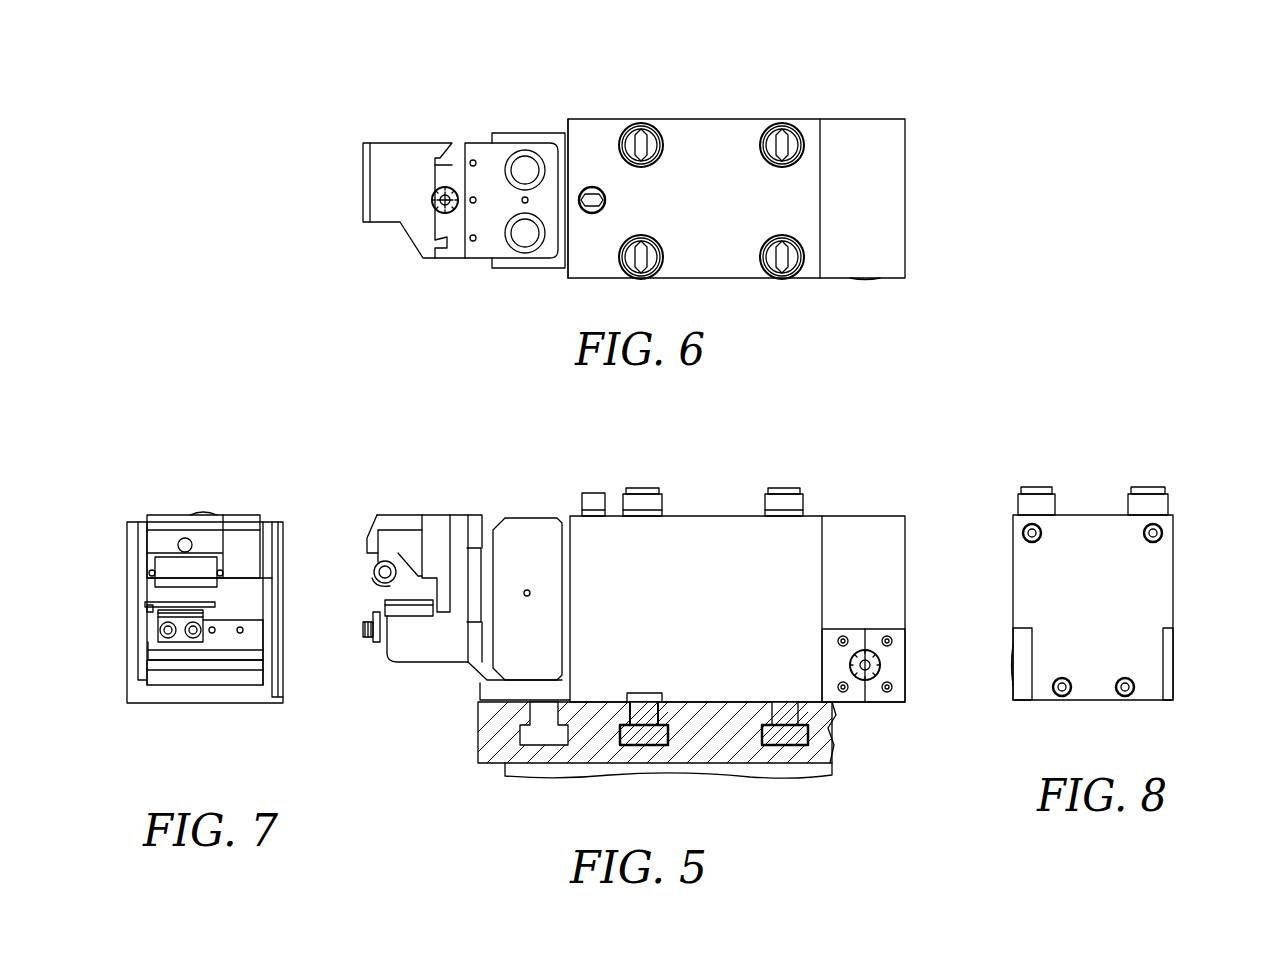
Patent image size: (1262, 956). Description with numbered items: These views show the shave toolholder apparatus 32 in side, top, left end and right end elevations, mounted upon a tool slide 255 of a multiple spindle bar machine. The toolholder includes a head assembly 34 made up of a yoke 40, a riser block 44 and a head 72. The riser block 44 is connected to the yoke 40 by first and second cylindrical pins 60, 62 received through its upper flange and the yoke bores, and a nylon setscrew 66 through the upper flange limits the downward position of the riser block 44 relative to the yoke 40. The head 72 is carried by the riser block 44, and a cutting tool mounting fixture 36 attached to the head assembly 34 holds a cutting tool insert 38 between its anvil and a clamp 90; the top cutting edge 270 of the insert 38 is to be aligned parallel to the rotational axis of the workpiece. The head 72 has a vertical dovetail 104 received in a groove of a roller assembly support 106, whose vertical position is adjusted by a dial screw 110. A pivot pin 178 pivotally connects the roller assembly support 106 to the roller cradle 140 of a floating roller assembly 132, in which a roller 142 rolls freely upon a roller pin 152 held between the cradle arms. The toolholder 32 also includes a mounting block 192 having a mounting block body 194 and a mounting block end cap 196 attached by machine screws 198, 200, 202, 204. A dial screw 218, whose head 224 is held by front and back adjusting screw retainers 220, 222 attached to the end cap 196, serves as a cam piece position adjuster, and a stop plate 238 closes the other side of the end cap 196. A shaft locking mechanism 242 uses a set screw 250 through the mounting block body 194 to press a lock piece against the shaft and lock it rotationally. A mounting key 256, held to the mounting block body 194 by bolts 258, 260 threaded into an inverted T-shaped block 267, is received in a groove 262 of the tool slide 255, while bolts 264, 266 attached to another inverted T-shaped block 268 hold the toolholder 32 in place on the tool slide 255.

In FIG. 6, the toolholder apparatus 32 is at (852, 92).
In FIG. 5, the toolholder apparatus 32 is at (866, 436).
In FIG. 7, the toolholder apparatus 32 is at (228, 487).
In FIG. 8, the toolholder apparatus 32 is at (1097, 450).
In FIG. 6, the head assembly 34 is at (441, 185).
In FIG. 5, the head assembly 34 is at (447, 610).
In FIG. 7, the head assembly 34 is at (156, 617).
In FIG. 5, the cutting tool mounting fixture 36 is at (398, 648).
In FIG. 7, the cutting tool mounting fixture 36 is at (120, 653).
In FIG. 7, the cutting tool insert 38 is at (147, 607).
In FIG. 6, the yoke 40 is at (520, 171).
In FIG. 5, the yoke 40 is at (533, 667).
In FIG. 7, the yoke 40 is at (277, 660).
In FIG. 6, the riser block 44 is at (482, 250).
In FIG. 5, the riser block 44 is at (487, 680).
In FIG. 7, the riser block 44 is at (215, 678).
In FIG. 6, the first cylindrical pin 60 is at (525, 167).
In FIG. 6, the second cylindrical pin 62 is at (525, 243).
In FIG. 6, the nylon setscrew 66 is at (522, 197).
In FIG. 6, the head 72 is at (390, 171).
In FIG. 5, the head 72 is at (406, 580).
In FIG. 7, the head 72 is at (220, 643).
In FIG. 5, the clamp 90 is at (375, 642).
In FIG. 7, the clamp 90 is at (180, 640).
In FIG. 6, the vertical dovetail 104 is at (437, 172).
In FIG. 6, the roller assembly support 106 is at (385, 147).
In FIG. 5, the roller assembly support 106 is at (422, 512).
In FIG. 7, the roller assembly support 106 is at (160, 525).
In FIG. 6, the dial screw 110 is at (432, 207).
In FIG. 7, the dial screw 110 is at (203, 511).
In FIG. 5, the floating roller assembly 132 is at (401, 526).
In FIG. 7, the floating roller assembly 132 is at (129, 577).
In FIG. 5, the roller cradle 140 is at (393, 552).
In FIG. 7, the roller cradle 140 is at (148, 563).
In FIG. 5, the roller 142 is at (360, 551).
In FIG. 7, the roller 142 is at (158, 583).
In FIG. 5, the roller pin 152 is at (383, 574).
In FIG. 7, the pivot pin 178 is at (177, 547).
In FIG. 6, the mounting block 192 is at (789, 153).
In FIG. 5, the mounting block 192 is at (761, 607).
In FIG. 7, the mounting block 192 is at (208, 654).
In FIG. 8, the mounting block 192 is at (1135, 607).
In FIG. 6, the mounting block body 194 is at (683, 132).
In FIG. 5, the mounting block body 194 is at (700, 525).
In FIG. 7, the mounting block body 194 is at (280, 655).
In FIG. 6, the mounting block end cap 196 is at (893, 181).
In FIG. 5, the mounting block end cap 196 is at (887, 639).
In FIG. 8, the mounting block end cap 196 is at (1152, 580).
In FIG. 8, the machine screw 198 is at (1162, 532).
In FIG. 8, the machine screw 200 is at (1023, 532).
In FIG. 8, the machine screw 202 is at (1128, 690).
In FIG. 8, the machine screw 204 is at (1065, 690).
In FIG. 5, the dial screw 218 is at (887, 714).
In FIG. 5, the front adjusting screw retainer 220 is at (830, 697).
In FIG. 5, the back adjusting screw retainer 222 is at (897, 668).
In FIG. 8, the back adjusting screw retainer 222 is at (1020, 683).
In FIG. 5, the head of dial screw 224 is at (887, 714).
In FIG. 8, the stop plate 238 is at (1168, 665).
In FIG. 6, the shaft locking mechanism 242 is at (627, 119).
In FIG. 5, the shaft locking mechanism 242 is at (651, 457).
In FIG. 6, the set screw 250 is at (592, 187).
In FIG. 5, the set screw 250 is at (593, 492).
In FIG. 5, the tool slide 255 is at (740, 753).
In FIG. 5, the mounting key 256 is at (662, 712).
In FIG. 6, the bolt 258 is at (641, 124).
In FIG. 6, the bolt 260 is at (641, 279).
In FIG. 5, the bolt 260 is at (633, 488).
In FIG. 5, the groove 262 is at (652, 738).
In FIG. 6, the bolt 264 is at (782, 124).
In FIG. 8, the bolt 264 is at (1145, 493).
In FIG. 6, the bolt 266 is at (782, 279).
In FIG. 5, the bolt 266 is at (777, 490).
In FIG. 8, the bolt 266 is at (1035, 493).
In FIG. 5, the inverted T-shaped block 267 is at (665, 767).
In FIG. 5, the inverted T-shaped block 268 is at (793, 740).
In FIG. 7, the top cutting edge 270 is at (153, 598).